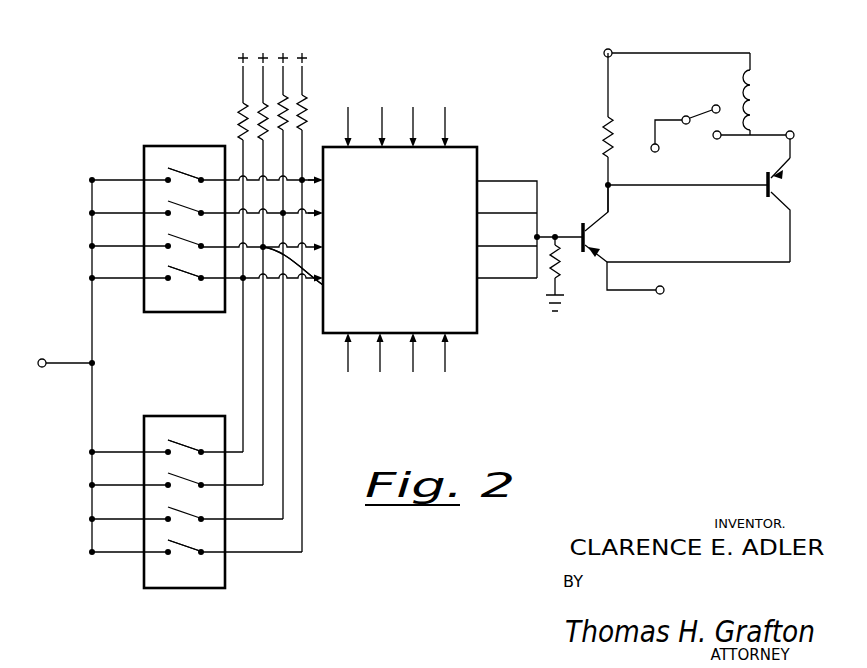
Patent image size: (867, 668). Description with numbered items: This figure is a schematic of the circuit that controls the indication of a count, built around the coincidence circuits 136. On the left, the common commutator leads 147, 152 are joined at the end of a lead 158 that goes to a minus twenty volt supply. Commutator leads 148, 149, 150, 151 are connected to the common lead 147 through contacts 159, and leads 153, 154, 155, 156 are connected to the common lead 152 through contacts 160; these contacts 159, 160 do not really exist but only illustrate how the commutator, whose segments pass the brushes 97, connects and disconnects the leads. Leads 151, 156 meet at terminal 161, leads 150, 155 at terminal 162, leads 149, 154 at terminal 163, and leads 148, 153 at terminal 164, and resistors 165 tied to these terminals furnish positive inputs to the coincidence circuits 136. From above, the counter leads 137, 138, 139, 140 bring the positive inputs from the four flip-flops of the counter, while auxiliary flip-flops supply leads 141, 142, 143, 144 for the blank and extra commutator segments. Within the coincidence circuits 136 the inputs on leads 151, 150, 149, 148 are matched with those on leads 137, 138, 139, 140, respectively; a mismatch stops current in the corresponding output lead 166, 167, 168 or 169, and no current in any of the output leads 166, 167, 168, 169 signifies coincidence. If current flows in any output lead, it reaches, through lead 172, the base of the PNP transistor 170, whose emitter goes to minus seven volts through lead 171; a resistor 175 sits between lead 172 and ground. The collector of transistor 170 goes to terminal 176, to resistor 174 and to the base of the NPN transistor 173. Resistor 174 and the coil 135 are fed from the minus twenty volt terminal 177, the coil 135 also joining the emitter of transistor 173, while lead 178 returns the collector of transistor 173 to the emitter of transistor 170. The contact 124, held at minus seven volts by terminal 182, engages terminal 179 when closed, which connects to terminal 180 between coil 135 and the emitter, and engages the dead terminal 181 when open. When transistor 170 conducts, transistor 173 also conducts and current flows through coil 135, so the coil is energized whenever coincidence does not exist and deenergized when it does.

The brushes 97 is at (178, 146).
The common commutator lead 147 is at (92, 224).
The commutator lead 148 is at (237, 278).
The commutator lead 149 is at (237, 245).
The commutator lead 150 is at (237, 212).
The commutator lead 151 is at (236, 180).
The contacts 159 is at (167, 172).
The terminal 164 is at (241, 282).
The resistors 165 is at (240, 127).
The counter lead 137 is at (347, 120).
The counter lead 138 is at (383, 118).
The counter lead 139 is at (414, 120).
The counter lead 140 is at (447, 119).
The coincidence circuits 136 is at (400, 240).
The terminal 161 is at (300, 178).
The terminal 162 is at (290, 212).
The terminal 163 is at (312, 278).
The output lead 166 is at (530, 181).
The output lead 167 is at (526, 213).
The output lead 168 is at (526, 246).
The output lead 169 is at (526, 278).
The lead 141 is at (348, 360).
The lead 142 is at (380, 360).
The lead 143 is at (413, 360).
The lead 144 is at (445, 360).
The lead 172 is at (548, 237).
The resistor 175 is at (560, 282).
The PNP transistor 170 is at (597, 244).
The terminal 176 is at (609, 188).
The resistor 174 is at (604, 124).
The terminal 177 is at (604, 57).
The coil 135 is at (753, 87).
The terminal 182 is at (651, 146).
The dead terminal 181 is at (712, 109).
The terminal 179 is at (727, 120).
The contact 124 is at (706, 125).
The terminal 180 is at (789, 130).
The NPN transistor 173 is at (772, 186).
The lead 178 is at (757, 265).
The lead 171 is at (650, 293).
The lead 158 is at (68, 365).
The common commutator lead 152 is at (92, 498).
The commutator lead 153 is at (236, 452).
The commutator lead 154 is at (236, 485).
The commutator lead 155 is at (236, 519).
The commutator lead 156 is at (245, 552).
The contacts 160 is at (167, 446).